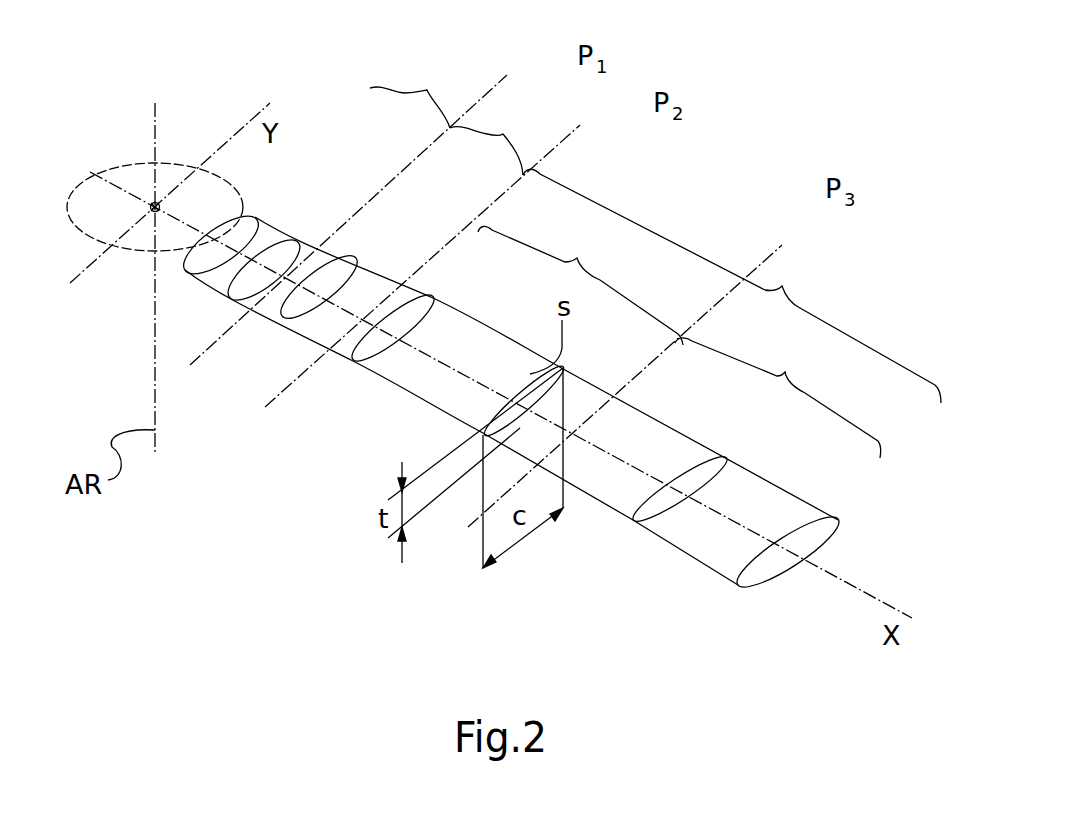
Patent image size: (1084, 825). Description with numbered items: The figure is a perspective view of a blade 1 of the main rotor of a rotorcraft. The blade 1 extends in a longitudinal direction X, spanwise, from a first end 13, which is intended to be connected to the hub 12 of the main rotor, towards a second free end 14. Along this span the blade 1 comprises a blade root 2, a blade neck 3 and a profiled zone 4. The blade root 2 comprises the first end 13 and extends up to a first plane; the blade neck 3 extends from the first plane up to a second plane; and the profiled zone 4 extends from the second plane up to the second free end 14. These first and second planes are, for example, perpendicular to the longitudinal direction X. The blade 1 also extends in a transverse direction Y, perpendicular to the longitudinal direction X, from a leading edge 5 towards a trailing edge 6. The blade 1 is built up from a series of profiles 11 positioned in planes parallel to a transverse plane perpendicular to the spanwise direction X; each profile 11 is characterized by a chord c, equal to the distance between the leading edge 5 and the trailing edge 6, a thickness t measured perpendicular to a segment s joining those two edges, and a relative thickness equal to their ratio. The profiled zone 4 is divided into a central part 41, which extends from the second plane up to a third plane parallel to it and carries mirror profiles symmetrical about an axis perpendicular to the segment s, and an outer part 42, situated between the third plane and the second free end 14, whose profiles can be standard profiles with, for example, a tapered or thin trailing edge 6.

The blade 1 is at (236, 569).
The blade root 2 is at (410, 94).
The blade neck 3 is at (487, 140).
The profiled zone 4 is at (732, 286).
The central part 41 is at (580, 285).
The outer part 42 is at (778, 398).
The leading edge 5 is at (592, 496).
The trailing edge 6 is at (658, 420).
The profiles 11 is at (280, 298).
The hub 12 is at (132, 165).
The first end 13 is at (196, 243).
The second free end 14 is at (820, 545).